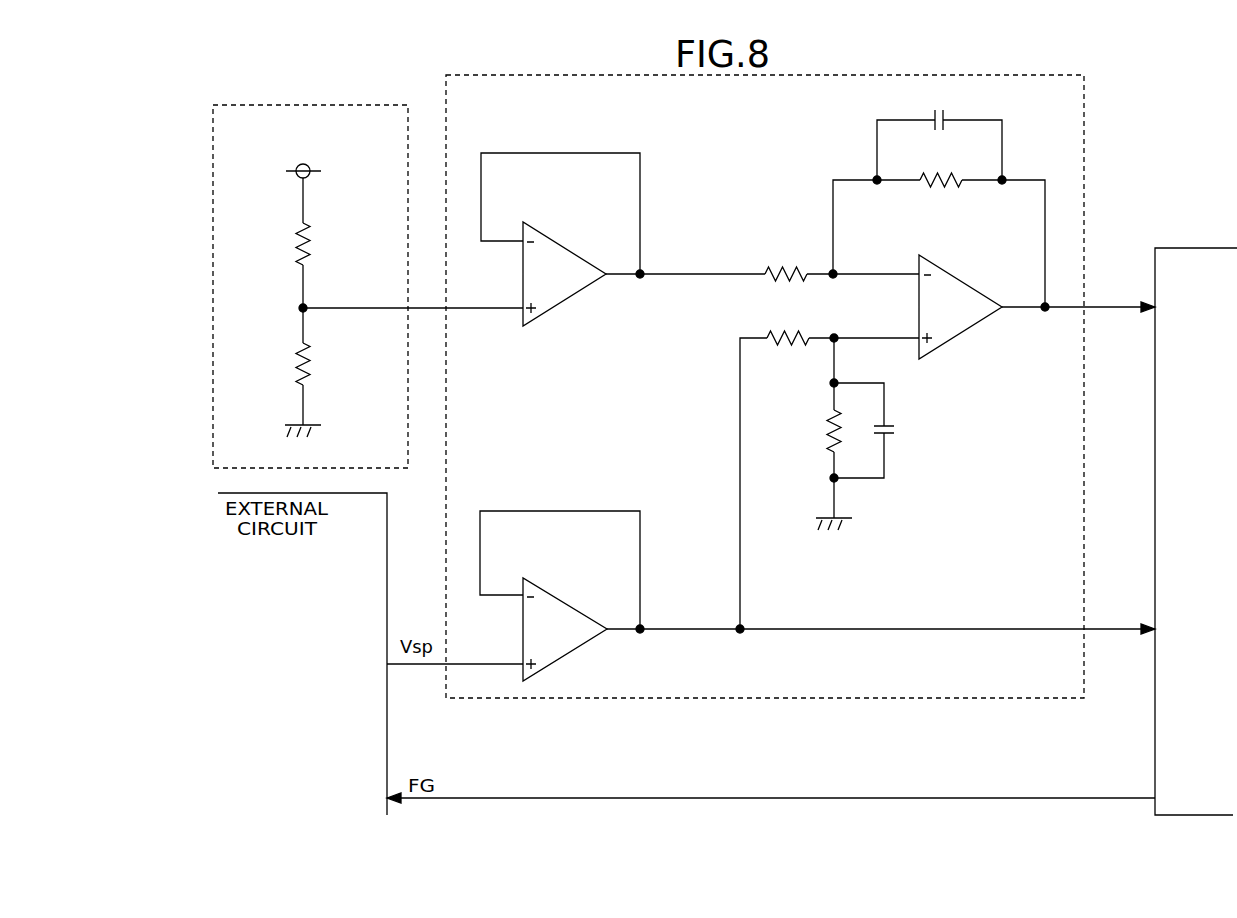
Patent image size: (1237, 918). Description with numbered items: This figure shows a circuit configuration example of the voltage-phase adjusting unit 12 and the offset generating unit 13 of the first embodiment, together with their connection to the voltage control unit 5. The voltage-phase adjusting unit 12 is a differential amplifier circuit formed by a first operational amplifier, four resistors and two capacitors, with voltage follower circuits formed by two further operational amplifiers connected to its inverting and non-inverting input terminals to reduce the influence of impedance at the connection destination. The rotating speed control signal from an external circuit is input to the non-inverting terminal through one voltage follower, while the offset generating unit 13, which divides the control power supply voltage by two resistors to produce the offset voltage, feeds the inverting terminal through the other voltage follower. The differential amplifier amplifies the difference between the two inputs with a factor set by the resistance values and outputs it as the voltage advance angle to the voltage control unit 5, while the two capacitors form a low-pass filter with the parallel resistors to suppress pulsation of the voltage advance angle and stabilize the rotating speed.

The offset generating unit 13 is at (371, 105).
The voltage-phase adjusting unit 12 is at (1035, 76).
The voltage control unit 5 is at (1178, 248).